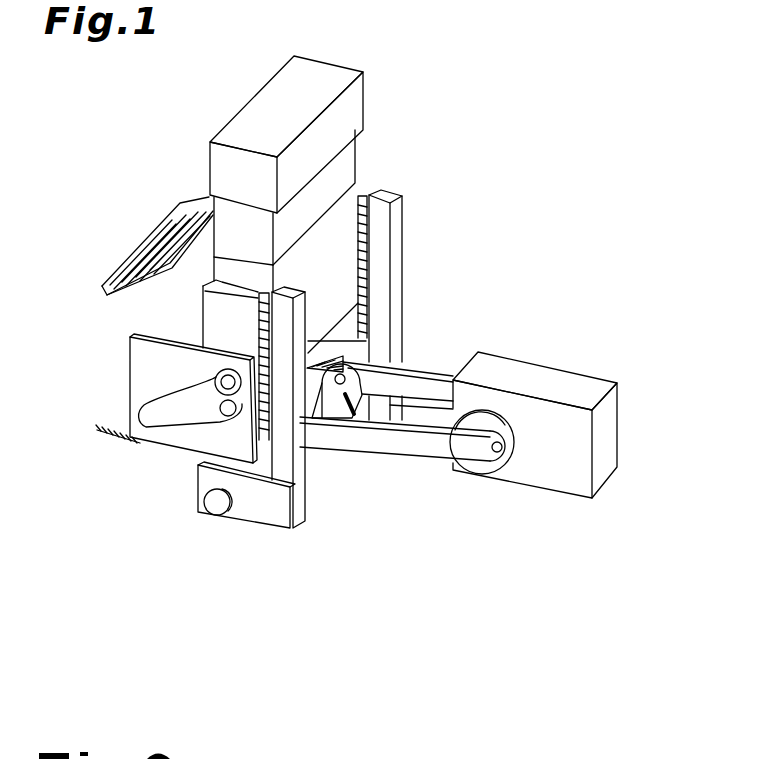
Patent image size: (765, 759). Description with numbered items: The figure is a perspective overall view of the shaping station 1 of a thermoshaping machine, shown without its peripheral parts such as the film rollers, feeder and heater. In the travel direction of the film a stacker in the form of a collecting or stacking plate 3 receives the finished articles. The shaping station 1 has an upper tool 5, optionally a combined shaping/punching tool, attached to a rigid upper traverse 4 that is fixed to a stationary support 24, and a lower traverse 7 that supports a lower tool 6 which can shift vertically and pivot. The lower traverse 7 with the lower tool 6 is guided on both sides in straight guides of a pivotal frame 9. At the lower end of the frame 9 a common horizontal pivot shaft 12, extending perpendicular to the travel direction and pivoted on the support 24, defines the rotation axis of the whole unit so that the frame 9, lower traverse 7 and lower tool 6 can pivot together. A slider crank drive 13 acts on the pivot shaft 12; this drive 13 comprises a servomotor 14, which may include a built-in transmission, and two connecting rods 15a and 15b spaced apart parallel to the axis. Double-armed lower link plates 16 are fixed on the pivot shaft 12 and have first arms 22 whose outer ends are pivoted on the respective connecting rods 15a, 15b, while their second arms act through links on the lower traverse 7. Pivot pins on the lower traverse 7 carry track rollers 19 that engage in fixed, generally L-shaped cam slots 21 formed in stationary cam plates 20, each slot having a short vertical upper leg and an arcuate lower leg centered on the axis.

The shaping station 1 is at (100, 180).
The collecting or stacking plate 3 is at (120, 275).
The upper traverse 4 is at (256, 114).
The upper tool 5 is at (338, 165).
The lower tool 6 is at (337, 213).
The lower traverse 7 is at (335, 286).
The pivotal frame 9 is at (398, 231).
The pivot shaft 12 is at (213, 505).
The slider crank drive 13 is at (510, 332).
The servomotor 14 is at (588, 385).
The connecting rod 15a is at (432, 448).
The connecting rod 15b is at (430, 380).
The lower link plate 16 is at (307, 397).
The track roller 19 is at (213, 376).
The cam plate 20 is at (142, 378).
The cam slot 21 is at (172, 421).
The first arm 22 is at (358, 398).
The stationary support 24 is at (96, 432).